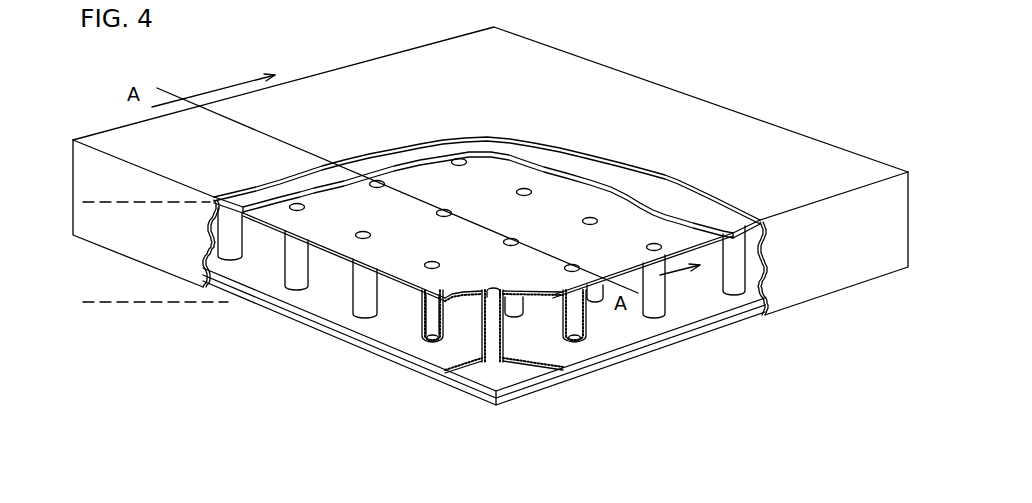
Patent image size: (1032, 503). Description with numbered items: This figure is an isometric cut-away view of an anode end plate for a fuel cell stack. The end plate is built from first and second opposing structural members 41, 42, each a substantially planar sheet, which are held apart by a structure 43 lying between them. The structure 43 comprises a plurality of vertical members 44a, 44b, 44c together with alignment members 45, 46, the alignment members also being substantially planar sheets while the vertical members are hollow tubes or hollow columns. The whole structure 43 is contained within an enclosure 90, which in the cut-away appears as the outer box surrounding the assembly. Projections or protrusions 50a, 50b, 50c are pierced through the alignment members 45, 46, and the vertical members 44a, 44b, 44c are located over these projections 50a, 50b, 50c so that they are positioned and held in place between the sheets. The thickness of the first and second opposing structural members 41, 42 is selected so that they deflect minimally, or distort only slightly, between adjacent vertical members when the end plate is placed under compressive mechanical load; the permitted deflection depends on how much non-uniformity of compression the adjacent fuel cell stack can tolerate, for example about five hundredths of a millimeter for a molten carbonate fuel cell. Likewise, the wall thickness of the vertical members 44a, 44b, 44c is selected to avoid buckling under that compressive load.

The enclosure 90 is at (807, 262).
The second structural member 42 is at (711, 217).
The alignment member 46 is at (630, 230).
The structure 43 is at (66, 200).
The vertical member 44a is at (295, 267).
The vertical member 44b is at (363, 290).
The vertical member 44c is at (432, 317).
The projection 50a is at (433, 347).
The projection 50b is at (496, 370).
The projection 50c is at (577, 343).
The first structural member 41 is at (715, 328).
The alignment member 45 is at (682, 327).